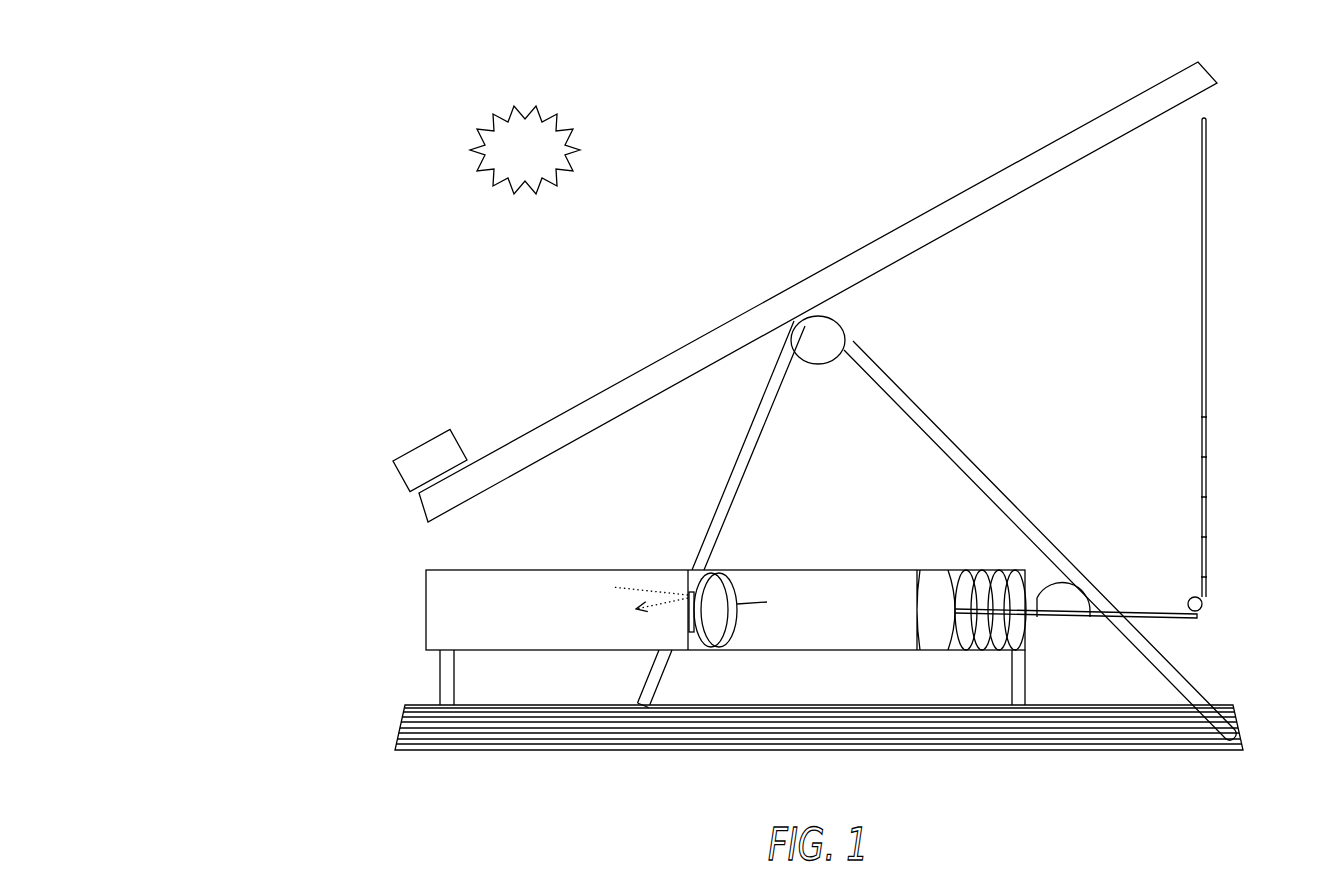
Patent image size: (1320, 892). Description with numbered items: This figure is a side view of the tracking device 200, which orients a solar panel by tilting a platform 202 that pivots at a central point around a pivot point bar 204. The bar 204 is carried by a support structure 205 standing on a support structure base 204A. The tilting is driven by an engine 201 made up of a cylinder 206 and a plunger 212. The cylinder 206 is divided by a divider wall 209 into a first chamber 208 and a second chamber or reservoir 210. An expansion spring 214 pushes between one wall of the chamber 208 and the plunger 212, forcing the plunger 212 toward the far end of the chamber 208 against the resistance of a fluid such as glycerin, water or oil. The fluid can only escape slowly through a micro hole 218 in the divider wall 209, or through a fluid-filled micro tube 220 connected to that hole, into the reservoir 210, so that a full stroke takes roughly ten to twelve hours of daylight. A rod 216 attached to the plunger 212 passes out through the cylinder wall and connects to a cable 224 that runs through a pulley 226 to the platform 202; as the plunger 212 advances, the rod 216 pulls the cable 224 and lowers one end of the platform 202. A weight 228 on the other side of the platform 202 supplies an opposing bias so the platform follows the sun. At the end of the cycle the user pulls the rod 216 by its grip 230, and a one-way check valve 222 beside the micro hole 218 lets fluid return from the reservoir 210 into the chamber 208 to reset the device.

The tracking device 200 is at (360, 190).
The engine 201 is at (291, 673).
The platform 202 is at (1010, 163).
The pivot point bar 204 is at (795, 318).
The support structure base 204A is at (1203, 750).
The support structure 205 is at (920, 428).
The cylinder 206 is at (866, 651).
The chamber 208 is at (838, 621).
The divider wall 209 is at (685, 630).
The reservoir 210 is at (426, 612).
The plunger 212 is at (938, 597).
The spring 214 is at (976, 570).
The rod 216 is at (1096, 619).
The micro hole 218 is at (687, 591).
The micro tube 220 is at (724, 574).
The check valve 222 is at (699, 645).
The cable 224 is at (1207, 350).
The pulley 226 is at (1203, 605).
The weight 228 is at (422, 445).
The grip 230 is at (1046, 577).